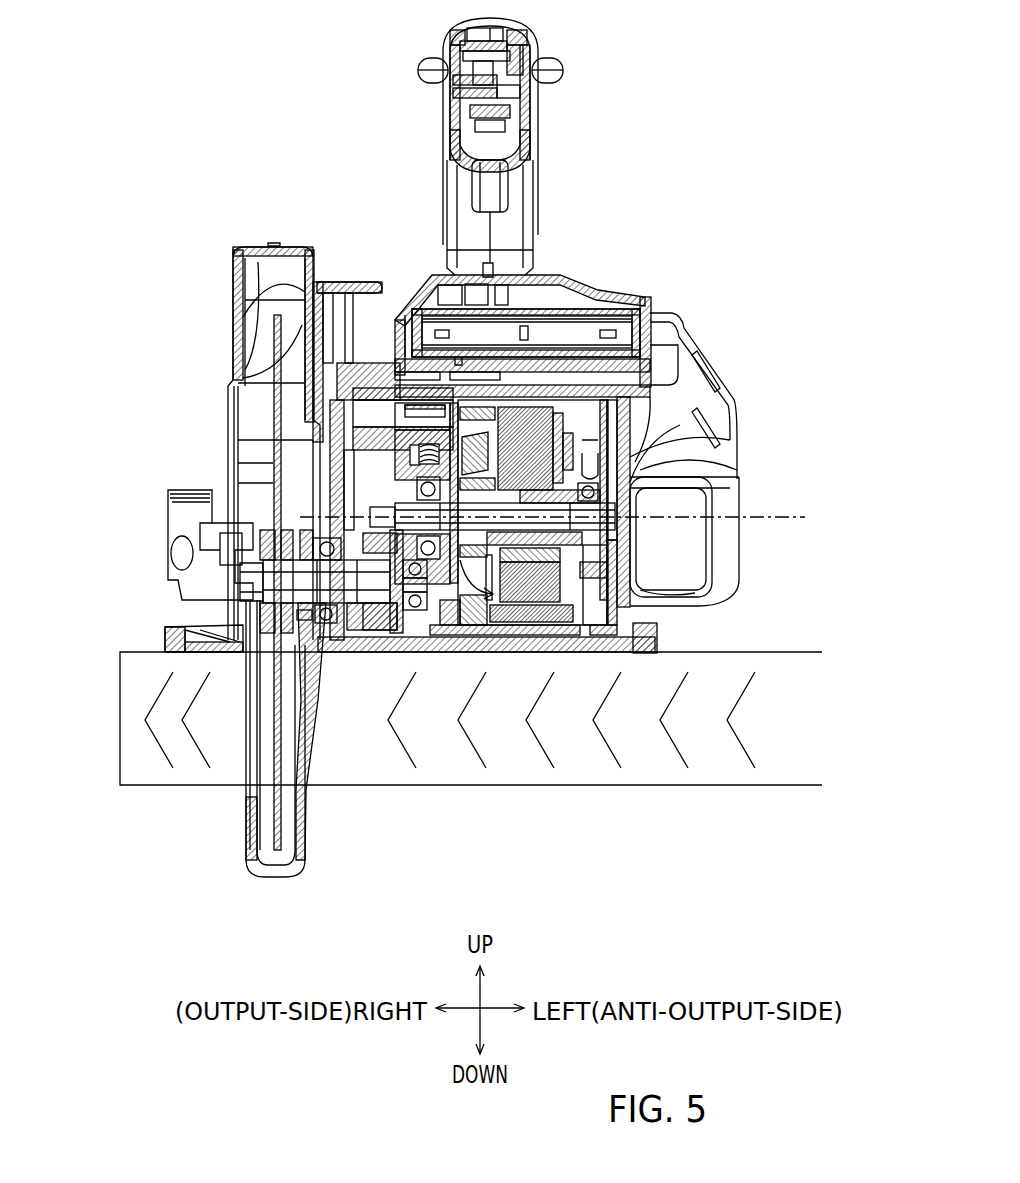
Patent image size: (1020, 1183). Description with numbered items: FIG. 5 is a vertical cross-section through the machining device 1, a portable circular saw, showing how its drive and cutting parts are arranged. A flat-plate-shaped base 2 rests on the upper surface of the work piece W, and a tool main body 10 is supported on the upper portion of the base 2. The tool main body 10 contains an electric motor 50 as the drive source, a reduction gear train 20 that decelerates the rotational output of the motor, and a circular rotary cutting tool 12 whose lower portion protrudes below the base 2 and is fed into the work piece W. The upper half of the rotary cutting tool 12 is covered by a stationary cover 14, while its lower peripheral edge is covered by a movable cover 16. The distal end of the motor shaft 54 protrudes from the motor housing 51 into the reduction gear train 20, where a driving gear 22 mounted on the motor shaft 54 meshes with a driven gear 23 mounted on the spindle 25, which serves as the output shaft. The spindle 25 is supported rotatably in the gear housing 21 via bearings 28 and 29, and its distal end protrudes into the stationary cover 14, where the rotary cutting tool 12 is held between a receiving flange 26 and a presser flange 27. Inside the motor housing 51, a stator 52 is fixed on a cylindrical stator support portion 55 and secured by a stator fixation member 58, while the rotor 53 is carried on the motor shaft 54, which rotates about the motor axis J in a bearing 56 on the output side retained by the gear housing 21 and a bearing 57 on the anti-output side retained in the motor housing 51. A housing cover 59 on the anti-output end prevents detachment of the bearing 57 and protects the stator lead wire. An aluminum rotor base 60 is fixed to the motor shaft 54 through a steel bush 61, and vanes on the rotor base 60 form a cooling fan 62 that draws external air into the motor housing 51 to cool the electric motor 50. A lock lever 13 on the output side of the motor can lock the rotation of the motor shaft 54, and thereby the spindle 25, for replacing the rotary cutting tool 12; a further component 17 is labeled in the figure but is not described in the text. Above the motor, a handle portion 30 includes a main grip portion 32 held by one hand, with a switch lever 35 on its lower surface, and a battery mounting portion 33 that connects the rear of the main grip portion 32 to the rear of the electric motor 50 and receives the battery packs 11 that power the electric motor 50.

The machining device 1 is at (636, 167).
The base 2 is at (155, 640).
The tool main body 10 is at (613, 285).
The battery packs 11 is at (680, 376).
The rotary cutting tool 12 is at (272, 406).
The lock lever 13 is at (462, 625).
The stationary cover 14 is at (262, 255).
The movable cover 16 is at (250, 855).
The lever 17 is at (190, 506).
The reduction gear train 20 is at (377, 637).
The gear housing 21 is at (360, 288).
The driving gear 22 is at (367, 472).
The driven gear 23 is at (385, 630).
The spindle 25 is at (300, 593).
The receiving flange 26 is at (288, 633).
The presser flange 27 is at (267, 625).
The bearing 28 is at (330, 625).
The bearing 29 is at (430, 632).
The handle portion 30 is at (567, 42).
The main grip portion 32 is at (512, 228).
The battery mounting portion 33 is at (650, 305).
The switch lever 35 is at (487, 190).
The electric motor 50 is at (640, 423).
The motor housing 51 is at (578, 445).
The stator 52 is at (605, 470).
The rotor 53 is at (658, 387).
The motor shaft 54 is at (538, 622).
The stator support portion 55 is at (567, 600).
The bearing 56 is at (445, 625).
The bearing 57 is at (613, 625).
The stator fixation member 58 is at (511, 622).
The housing cover 59 is at (692, 594).
The rotor base 60 is at (452, 350).
The steel bush 61 is at (525, 410).
The cooling fan 62 is at (490, 600).
The motor axis J is at (566, 518).
The work piece W is at (763, 652).